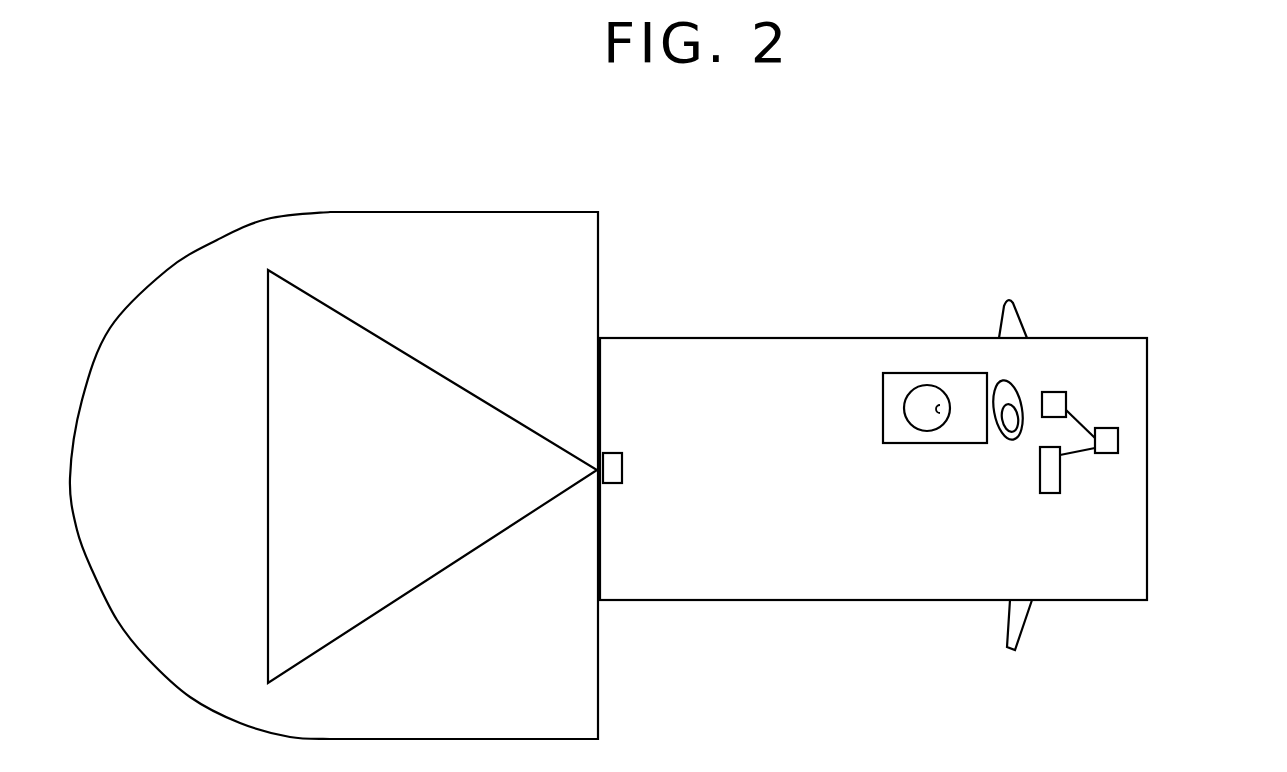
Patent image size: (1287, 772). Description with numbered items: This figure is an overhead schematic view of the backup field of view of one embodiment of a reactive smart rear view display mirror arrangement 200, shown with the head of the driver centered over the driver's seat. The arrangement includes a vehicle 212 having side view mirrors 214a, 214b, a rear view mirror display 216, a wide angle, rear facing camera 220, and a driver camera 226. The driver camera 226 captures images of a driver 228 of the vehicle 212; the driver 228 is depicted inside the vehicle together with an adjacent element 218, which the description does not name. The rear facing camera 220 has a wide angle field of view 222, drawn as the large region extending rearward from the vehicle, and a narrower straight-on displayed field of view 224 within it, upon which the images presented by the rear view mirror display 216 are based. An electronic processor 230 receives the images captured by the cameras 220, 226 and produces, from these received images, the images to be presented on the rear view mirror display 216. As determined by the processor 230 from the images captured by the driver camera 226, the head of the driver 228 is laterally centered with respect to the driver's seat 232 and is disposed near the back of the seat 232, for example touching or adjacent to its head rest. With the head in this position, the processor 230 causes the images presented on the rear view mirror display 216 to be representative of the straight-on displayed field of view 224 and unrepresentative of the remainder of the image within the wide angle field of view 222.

The reactive smart rear view display mirror arrangement 200 is at (1070, 113).
The vehicle 212 is at (860, 578).
The side view mirror 214a is at (997, 300).
The side view mirror 214b is at (1025, 640).
The rear view mirror display 216 is at (1060, 473).
The photosensor 218 is at (1013, 403).
The wide angle, rear facing camera 220 is at (623, 472).
The wide angle field of view 222 is at (425, 212).
The straight-on displayed field of view 224 is at (440, 368).
The driver camera 226 is at (1066, 403).
The driver 228 is at (913, 390).
The electronic processor 230 is at (1118, 440).
The driver's seat 232 is at (950, 447).